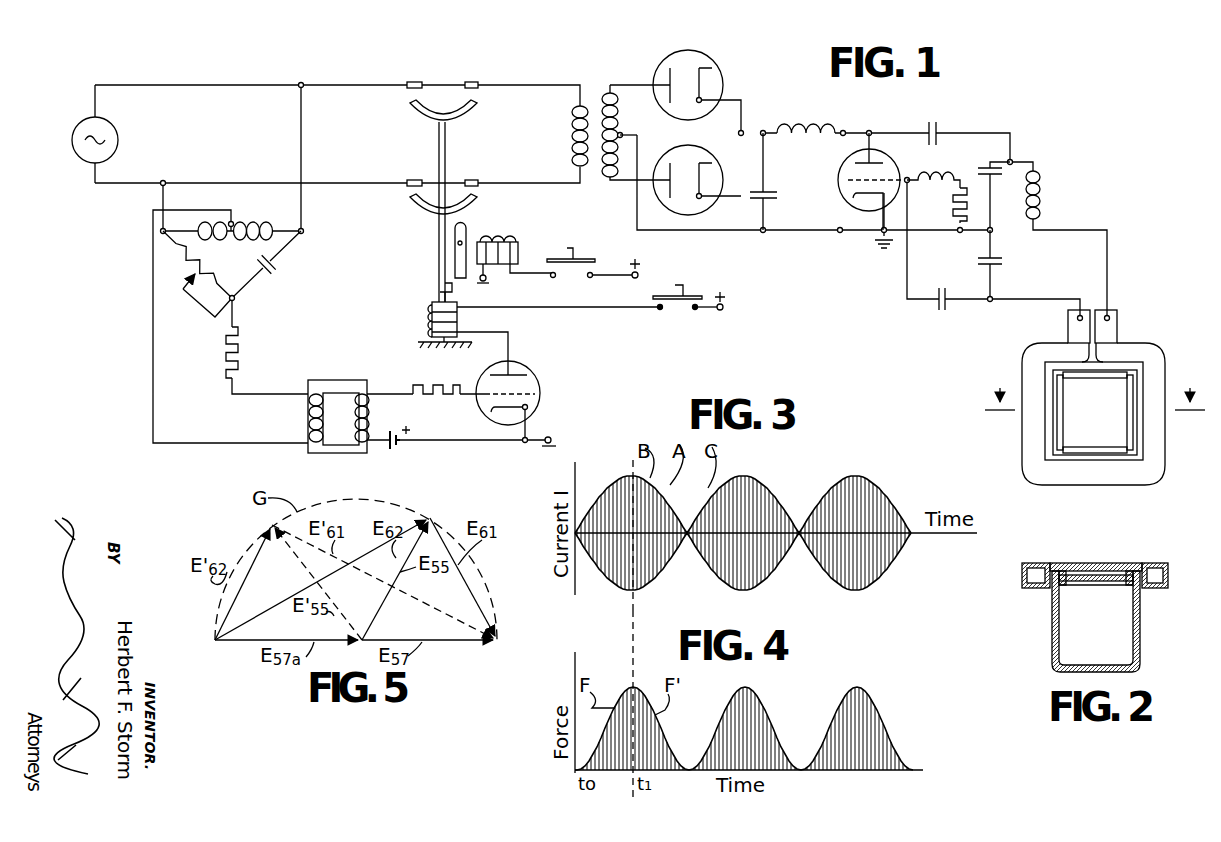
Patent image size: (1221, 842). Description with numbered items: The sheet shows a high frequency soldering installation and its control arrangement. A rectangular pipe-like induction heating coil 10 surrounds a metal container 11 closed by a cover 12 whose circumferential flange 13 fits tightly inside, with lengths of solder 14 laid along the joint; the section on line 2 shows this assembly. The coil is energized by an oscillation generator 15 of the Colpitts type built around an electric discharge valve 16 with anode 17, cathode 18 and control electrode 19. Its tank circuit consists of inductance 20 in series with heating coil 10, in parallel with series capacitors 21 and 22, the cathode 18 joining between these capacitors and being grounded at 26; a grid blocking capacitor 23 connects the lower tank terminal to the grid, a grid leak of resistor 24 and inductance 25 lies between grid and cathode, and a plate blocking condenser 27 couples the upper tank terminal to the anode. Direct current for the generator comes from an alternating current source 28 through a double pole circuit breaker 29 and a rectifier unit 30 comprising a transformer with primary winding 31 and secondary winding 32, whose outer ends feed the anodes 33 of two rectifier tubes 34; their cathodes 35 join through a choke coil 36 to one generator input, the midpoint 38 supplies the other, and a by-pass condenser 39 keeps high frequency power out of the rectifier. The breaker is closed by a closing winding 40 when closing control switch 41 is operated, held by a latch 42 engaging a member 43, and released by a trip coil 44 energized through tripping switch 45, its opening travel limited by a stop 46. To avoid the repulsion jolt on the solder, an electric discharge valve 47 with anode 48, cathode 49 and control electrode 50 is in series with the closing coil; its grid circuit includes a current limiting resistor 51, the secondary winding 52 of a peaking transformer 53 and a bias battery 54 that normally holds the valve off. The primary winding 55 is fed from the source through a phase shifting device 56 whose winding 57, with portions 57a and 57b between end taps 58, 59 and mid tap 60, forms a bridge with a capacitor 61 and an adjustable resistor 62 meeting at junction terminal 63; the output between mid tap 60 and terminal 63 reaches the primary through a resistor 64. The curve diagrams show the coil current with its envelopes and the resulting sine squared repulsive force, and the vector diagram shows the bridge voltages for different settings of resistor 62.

In FIG. 1, the induction heating coil 10 is at (1118, 394).
In FIG. 2, the induction heating coil 10 is at (1020, 570).
In FIG. 1, the metal container 11 is at (1138, 380).
In FIG. 2, the metal container 11 is at (1052, 636).
In FIG. 1, the cover 12 is at (1192, 437).
In FIG. 2, the cover 12 is at (1090, 574).
In FIG. 2, the circumferential flange 13 is at (1062, 592).
In FIG. 1, the solder 14 is at (1095, 447).
In FIG. 2, the solder 14 is at (1062, 568).
In FIG. 1, the oscillation generator 15 is at (1016, 213).
In FIG. 1, the electric discharge valve 16 is at (859, 181).
In FIG. 1, the anode 17 is at (856, 162).
In FIG. 1, the cathode 18 is at (860, 196).
In FIG. 1, the control electrode 19 is at (848, 180).
In FIG. 1, the inductance 20 is at (1041, 178).
In FIG. 1, the capacitor 21 is at (1000, 188).
In FIG. 1, the capacitor 22 is at (980, 258).
In FIG. 1, the grid blocking capacitor 23 is at (946, 310).
In FIG. 1, the resistor 24 is at (954, 212).
In FIG. 1, the inductance 25 is at (930, 175).
In FIG. 1, the ground 26 is at (880, 246).
In FIG. 1, the plate blocking condenser 27 is at (935, 125).
In FIG. 1, the alternating current source 28 is at (117, 136).
In FIG. 1, the circuit breaker 29 is at (445, 103).
In FIG. 1, the rectifier unit 30 is at (684, 127).
In FIG. 1, the primary winding 31 is at (572, 141).
In FIG. 1, the secondary winding 32 is at (612, 93).
In FIG. 1, the anodes 33 is at (656, 78).
In FIG. 1, the rectifier tubes 34 is at (683, 68).
In FIG. 1, the cathodes 35 is at (712, 72).
In FIG. 1, the choke coil 36 is at (814, 127).
In FIG. 1, the midpoint 38 is at (621, 135).
In FIG. 1, the by-pass condenser 39 is at (770, 200).
In FIG. 1, the closing winding 40 is at (458, 318).
In FIG. 1, the closing control switch 41 is at (681, 290).
In FIG. 1, the latch 42 is at (455, 268).
In FIG. 1, the member 43 is at (440, 288).
In FIG. 1, the trip coil 44 is at (483, 242).
In FIG. 1, the tripping switch 45 is at (578, 230).
In FIG. 1, the stop 46 is at (418, 342).
In FIG. 1, the electric discharge valve 47 is at (533, 384).
In FIG. 1, the anode 48 is at (516, 372).
In FIG. 1, the cathode 49 is at (531, 418).
In FIG. 1, the control electrode 50 is at (540, 395).
In FIG. 1, the current limiting resistor 51 is at (420, 386).
In FIG. 1, the secondary winding 52 is at (369, 402).
In FIG. 1, the peaking transformer 53 is at (334, 432).
In FIG. 1, the bias battery 54 is at (397, 452).
In FIG. 1, the primary winding 55 is at (308, 402).
In FIG. 1, the phase shifting device 56 is at (235, 278).
In FIG. 1, the winding 57 is at (261, 196).
In FIG. 1, the winding portion 57a is at (214, 218).
In FIG. 1, the winding portion 57b is at (270, 218).
In FIG. 1, the end tap 58 is at (303, 231).
In FIG. 1, the end tap 59 is at (163, 231).
In FIG. 1, the mid tap 60 is at (233, 223).
In FIG. 1, the capacitor 61 is at (274, 264).
In FIG. 1, the adjustable resistor 62 is at (195, 274).
In FIG. 1, the junction terminal 63 is at (235, 300).
In FIG. 1, the resistor 64 is at (233, 346).
In FIG. 1, the section line 2 is at (1095, 387).